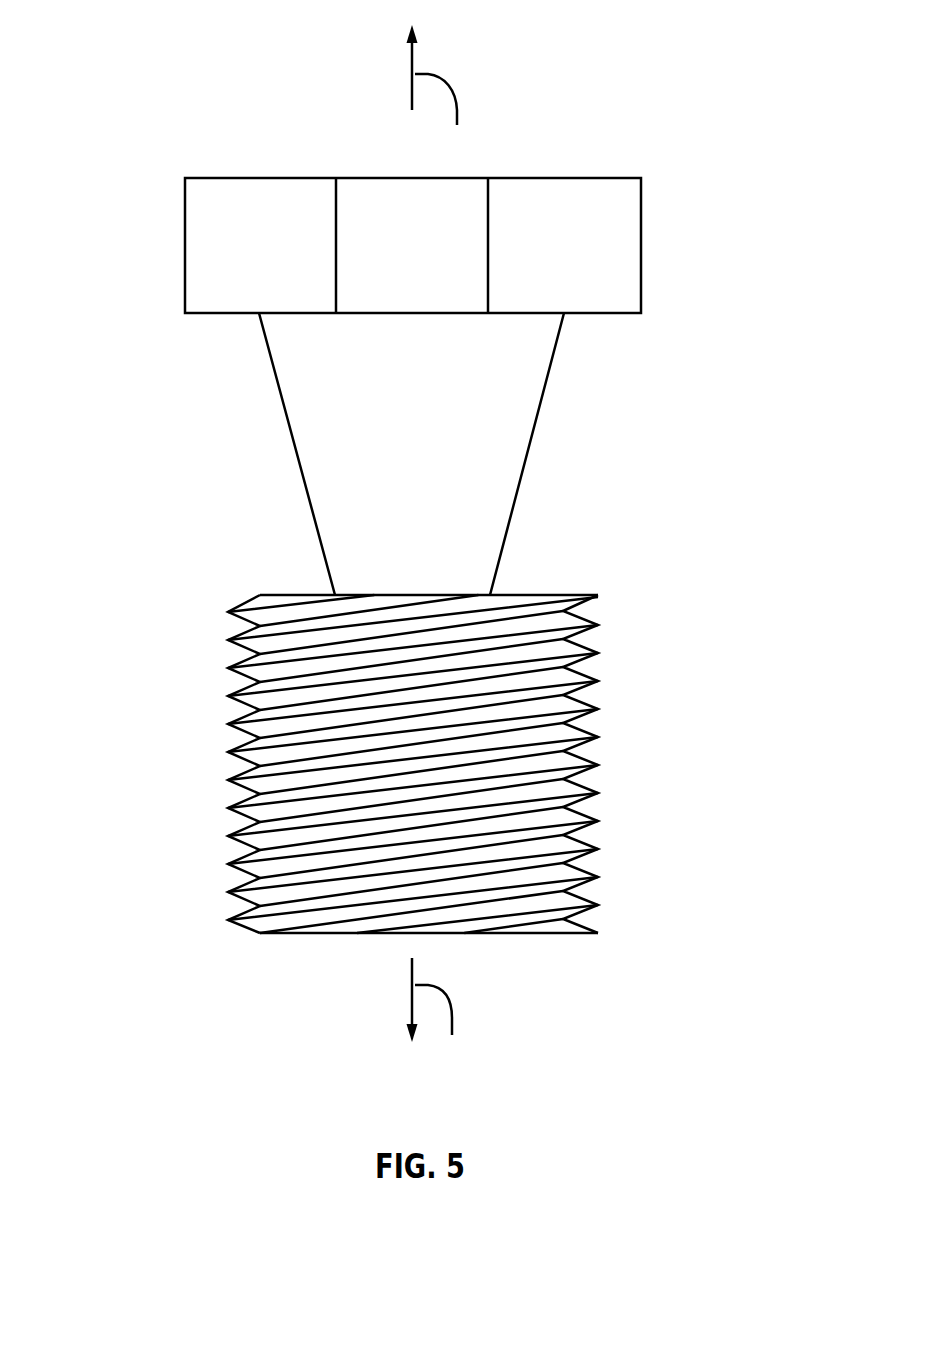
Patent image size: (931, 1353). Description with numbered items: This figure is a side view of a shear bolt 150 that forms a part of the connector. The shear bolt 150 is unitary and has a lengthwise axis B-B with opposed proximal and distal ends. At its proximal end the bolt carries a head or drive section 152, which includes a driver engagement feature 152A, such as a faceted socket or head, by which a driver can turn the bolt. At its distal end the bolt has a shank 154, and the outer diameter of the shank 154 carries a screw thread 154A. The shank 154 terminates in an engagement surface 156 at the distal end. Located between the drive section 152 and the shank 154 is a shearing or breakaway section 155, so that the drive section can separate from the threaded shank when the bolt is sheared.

The shear bolt 150 is at (682, 75).
The drive section 152 is at (667, 240).
The driver engagement feature 152A is at (208, 245).
The shank 154 is at (615, 782).
The screw thread 154A is at (598, 821).
The breakaway section 155 is at (502, 460).
The engagement surface 156 is at (507, 935).